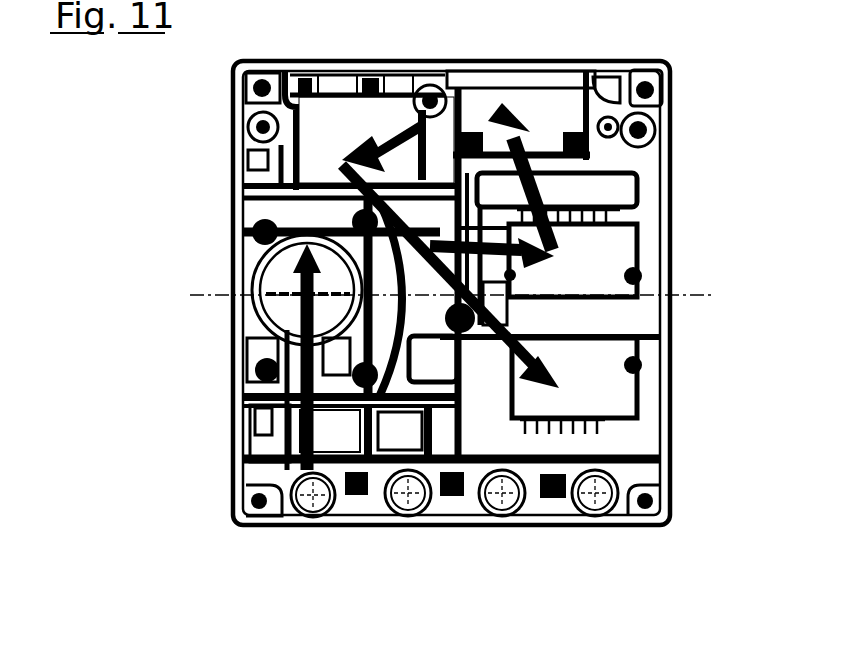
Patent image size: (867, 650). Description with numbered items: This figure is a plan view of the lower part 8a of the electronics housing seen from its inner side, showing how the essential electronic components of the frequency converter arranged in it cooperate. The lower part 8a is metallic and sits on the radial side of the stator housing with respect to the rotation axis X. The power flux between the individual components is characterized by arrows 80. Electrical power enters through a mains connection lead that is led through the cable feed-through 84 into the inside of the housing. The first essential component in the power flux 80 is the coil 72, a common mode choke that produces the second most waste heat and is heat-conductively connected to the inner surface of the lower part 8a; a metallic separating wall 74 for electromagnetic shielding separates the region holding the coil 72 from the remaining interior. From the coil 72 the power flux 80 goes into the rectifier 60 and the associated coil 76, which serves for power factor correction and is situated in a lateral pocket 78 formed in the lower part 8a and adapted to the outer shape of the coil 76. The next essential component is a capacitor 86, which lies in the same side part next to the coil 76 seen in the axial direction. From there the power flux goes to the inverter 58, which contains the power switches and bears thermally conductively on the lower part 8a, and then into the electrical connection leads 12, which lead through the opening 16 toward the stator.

The lower part 8a is at (668, 390).
The coil 76 is at (633, 110).
The arrows 80 is at (405, 143).
The rectifier 60 is at (617, 252).
The inverter 58 is at (613, 400).
The capacitor 86 is at (320, 153).
The coil 72 is at (283, 313).
The separating wall 74 is at (352, 423).
The cable feed-through 84 is at (300, 495).
The second opening 16 is at (440, 375).
The electrical connection leads 12 is at (530, 380).
The rotation axis X is at (690, 295).
The lateral pocket 78 is at (576, 5).